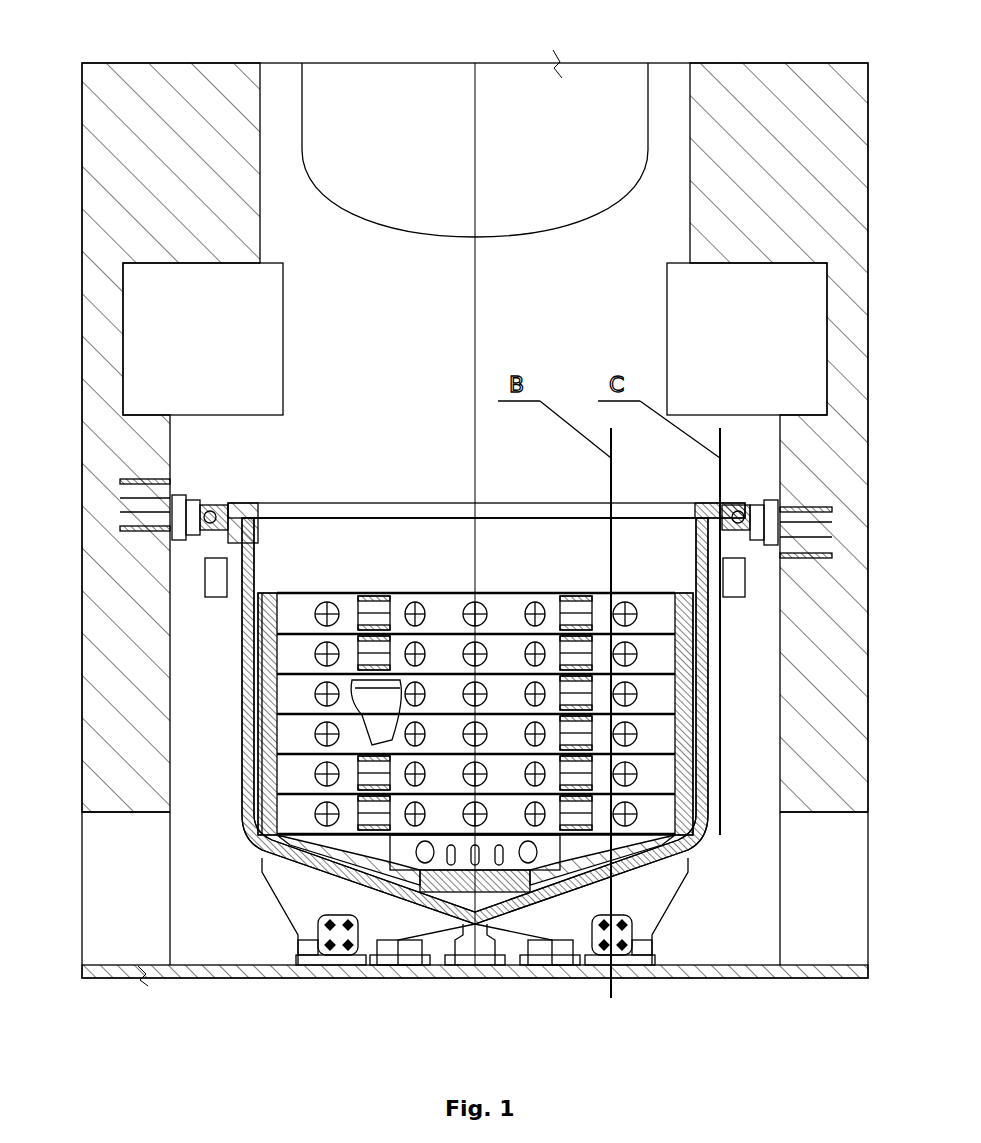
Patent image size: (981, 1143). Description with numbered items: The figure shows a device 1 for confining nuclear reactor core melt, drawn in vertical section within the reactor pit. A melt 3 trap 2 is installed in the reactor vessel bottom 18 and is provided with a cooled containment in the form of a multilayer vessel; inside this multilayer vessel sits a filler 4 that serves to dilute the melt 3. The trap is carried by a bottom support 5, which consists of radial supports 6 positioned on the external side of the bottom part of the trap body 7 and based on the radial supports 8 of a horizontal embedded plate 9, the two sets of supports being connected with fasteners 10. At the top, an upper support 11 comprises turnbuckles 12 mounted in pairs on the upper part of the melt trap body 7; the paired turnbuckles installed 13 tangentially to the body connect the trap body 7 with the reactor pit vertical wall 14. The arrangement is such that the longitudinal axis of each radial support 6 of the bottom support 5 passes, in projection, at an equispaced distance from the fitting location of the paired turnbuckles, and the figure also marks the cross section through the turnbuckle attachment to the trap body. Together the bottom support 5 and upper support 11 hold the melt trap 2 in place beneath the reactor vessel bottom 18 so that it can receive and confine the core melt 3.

The device for confining nuclear reactor core melt 1 is at (404, 493).
The melt trap 2 is at (298, 565).
The melt 3 is at (370, 712).
The filler 4 is at (300, 780).
The bottom support 5 is at (300, 945).
The radial supports 6 is at (662, 890).
The body 7 is at (697, 840).
The radial supports of the embedded plate 8 is at (580, 945).
The horizontal embedded plate 9 is at (300, 977).
The fasteners 10 is at (355, 933).
The upper support 11 is at (200, 505).
The turnbuckles 12 is at (740, 510).
The paired turnbuckles installed tangentially 13 is at (185, 528).
The reactor pit vertical wall 14 is at (845, 628).
The reactor vessel bottom 18 is at (537, 143).